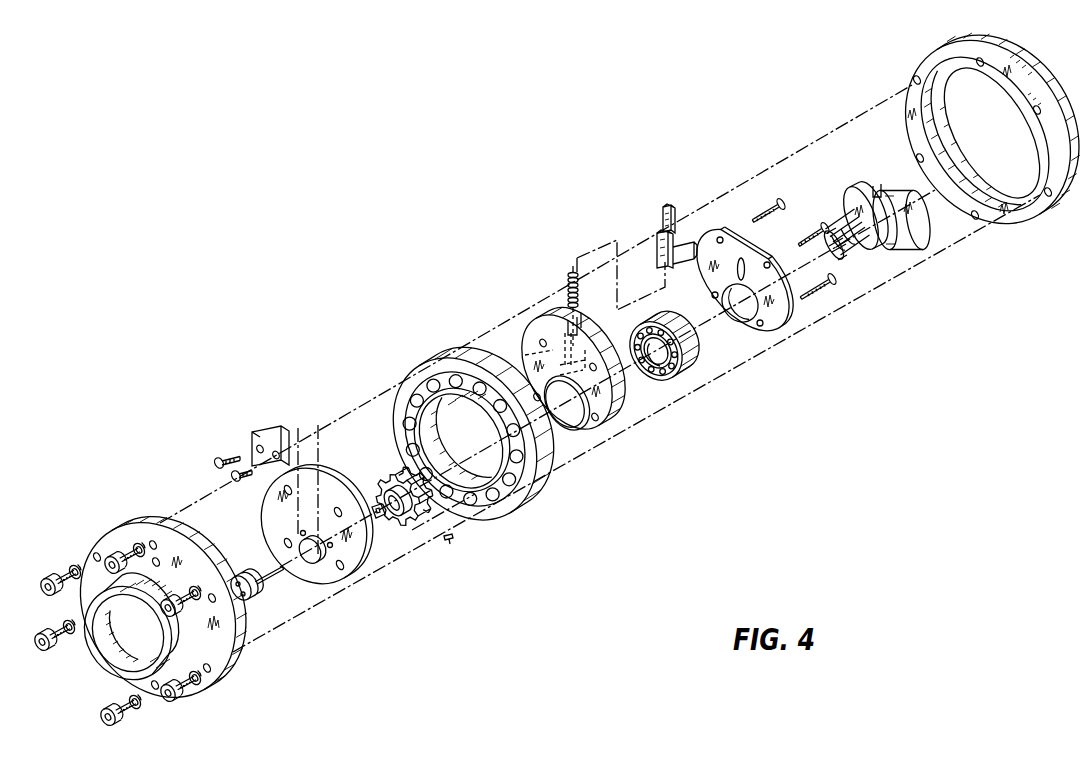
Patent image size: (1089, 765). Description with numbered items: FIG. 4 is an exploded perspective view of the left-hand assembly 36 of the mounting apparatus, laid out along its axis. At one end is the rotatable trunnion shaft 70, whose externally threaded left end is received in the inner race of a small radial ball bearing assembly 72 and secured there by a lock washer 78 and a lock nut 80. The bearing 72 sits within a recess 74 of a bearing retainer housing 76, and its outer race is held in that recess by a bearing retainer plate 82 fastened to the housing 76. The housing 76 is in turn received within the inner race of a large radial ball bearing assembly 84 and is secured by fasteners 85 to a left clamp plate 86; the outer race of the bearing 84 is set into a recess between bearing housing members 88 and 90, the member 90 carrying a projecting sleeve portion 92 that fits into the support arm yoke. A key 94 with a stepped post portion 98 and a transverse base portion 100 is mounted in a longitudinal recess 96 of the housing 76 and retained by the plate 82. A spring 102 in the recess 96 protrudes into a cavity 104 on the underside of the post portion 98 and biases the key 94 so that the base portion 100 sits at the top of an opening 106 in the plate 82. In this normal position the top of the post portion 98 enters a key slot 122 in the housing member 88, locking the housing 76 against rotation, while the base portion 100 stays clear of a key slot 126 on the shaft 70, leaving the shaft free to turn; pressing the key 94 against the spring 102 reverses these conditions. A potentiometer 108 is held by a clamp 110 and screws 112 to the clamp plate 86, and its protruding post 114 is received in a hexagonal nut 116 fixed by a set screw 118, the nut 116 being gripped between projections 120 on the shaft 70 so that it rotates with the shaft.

The drive assembly 36 is at (399, 299).
The trunnion shaft 70 is at (882, 215).
The small radial ball bearing assembly 72 is at (684, 350).
The recess 74 is at (560, 418).
The bearing retainer housing 76 is at (626, 392).
The lock washer 78 is at (404, 478).
The lock nut 80 is at (392, 504).
The bearing retainer plate 82 is at (750, 277).
The large radial ball bearing assembly 84 is at (524, 490).
The fasteners 85 is at (828, 226).
The left clamp plate 86 is at (333, 572).
The bearing housing member 88 is at (980, 131).
The bearing housing member 90 is at (234, 660).
The projecting sleeve portion 92 is at (94, 662).
The key 94 is at (667, 207).
The longitudinal recess 96 is at (573, 377).
The stepped post portion 98 is at (661, 214).
The transverse base portion 100 is at (686, 238).
The spring 102 is at (566, 286).
The cavity 104 is at (656, 270).
The opening 106 is at (745, 256).
The potentiometer 108 is at (240, 575).
The clamp 110 is at (258, 428).
The screws 112 is at (216, 466).
The protruding post 114 is at (270, 585).
The hexagonal nut 116 is at (381, 520).
The set screw 118 is at (451, 546).
The projections 120 is at (838, 251).
The key slot 122 is at (1012, 52).
The key slot 126 is at (886, 188).